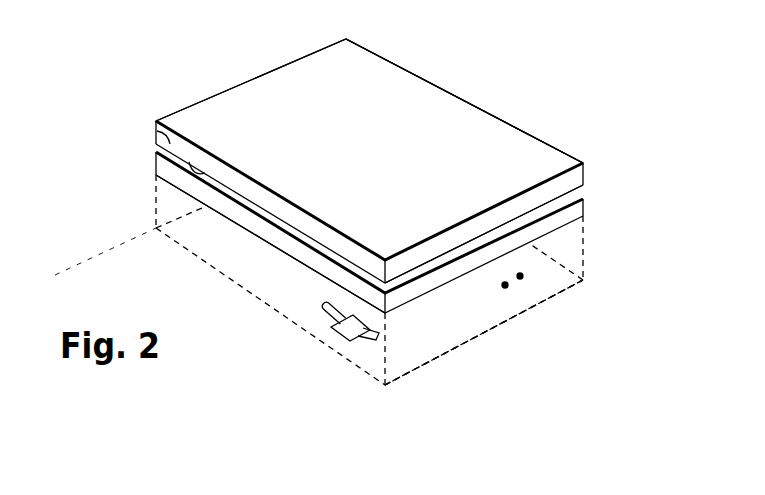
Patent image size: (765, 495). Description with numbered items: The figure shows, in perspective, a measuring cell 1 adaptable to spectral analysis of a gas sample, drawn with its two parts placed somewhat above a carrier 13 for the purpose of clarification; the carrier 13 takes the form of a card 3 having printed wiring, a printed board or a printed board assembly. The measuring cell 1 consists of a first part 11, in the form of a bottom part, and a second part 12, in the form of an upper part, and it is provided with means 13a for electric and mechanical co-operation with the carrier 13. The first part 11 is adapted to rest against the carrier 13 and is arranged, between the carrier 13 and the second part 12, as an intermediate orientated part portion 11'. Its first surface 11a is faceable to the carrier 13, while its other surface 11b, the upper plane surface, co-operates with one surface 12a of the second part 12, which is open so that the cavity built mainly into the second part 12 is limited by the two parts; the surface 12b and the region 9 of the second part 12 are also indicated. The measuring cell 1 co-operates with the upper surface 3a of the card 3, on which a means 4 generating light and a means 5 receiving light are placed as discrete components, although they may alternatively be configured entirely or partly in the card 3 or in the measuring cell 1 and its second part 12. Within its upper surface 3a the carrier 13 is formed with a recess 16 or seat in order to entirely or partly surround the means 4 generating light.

The measuring cell 1 is at (400, 90).
The card 3 is at (165, 250).
The upper surface of the card 3a is at (484, 339).
The means generating light 4 is at (339, 332).
The means receiving light 5 is at (560, 201).
The upper surface 9 is at (478, 135).
The first part 11 is at (316, 220).
The first surface of the first part 11a is at (173, 177).
The other surface of the first part 11b is at (155, 142).
The intermediate orientated part portion 11' is at (484, 319).
The second part 12 is at (220, 143).
The one surface of the second part 12a is at (193, 165).
The top surface of second plate 12b is at (313, 101).
The carrier 13 is at (539, 366).
The means for electric co-operation with the carrier 13a is at (523, 278).
The recess 16 is at (322, 306).